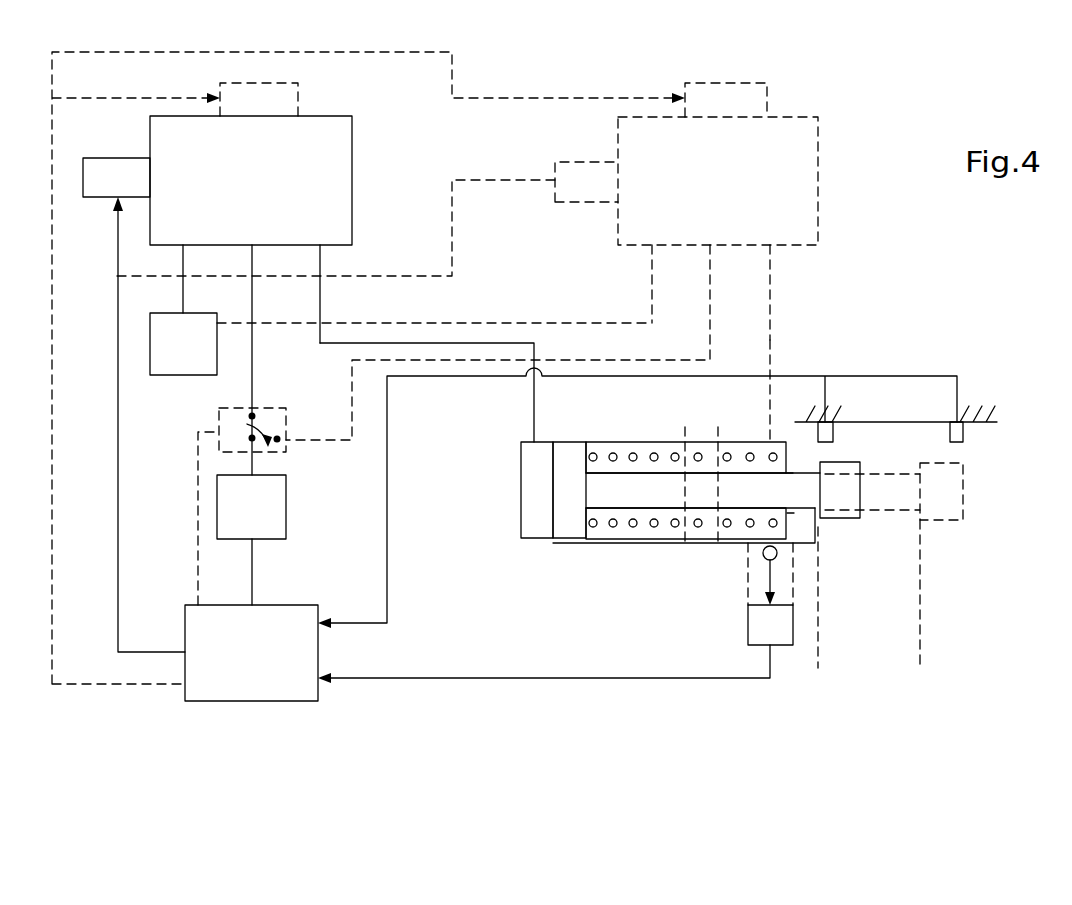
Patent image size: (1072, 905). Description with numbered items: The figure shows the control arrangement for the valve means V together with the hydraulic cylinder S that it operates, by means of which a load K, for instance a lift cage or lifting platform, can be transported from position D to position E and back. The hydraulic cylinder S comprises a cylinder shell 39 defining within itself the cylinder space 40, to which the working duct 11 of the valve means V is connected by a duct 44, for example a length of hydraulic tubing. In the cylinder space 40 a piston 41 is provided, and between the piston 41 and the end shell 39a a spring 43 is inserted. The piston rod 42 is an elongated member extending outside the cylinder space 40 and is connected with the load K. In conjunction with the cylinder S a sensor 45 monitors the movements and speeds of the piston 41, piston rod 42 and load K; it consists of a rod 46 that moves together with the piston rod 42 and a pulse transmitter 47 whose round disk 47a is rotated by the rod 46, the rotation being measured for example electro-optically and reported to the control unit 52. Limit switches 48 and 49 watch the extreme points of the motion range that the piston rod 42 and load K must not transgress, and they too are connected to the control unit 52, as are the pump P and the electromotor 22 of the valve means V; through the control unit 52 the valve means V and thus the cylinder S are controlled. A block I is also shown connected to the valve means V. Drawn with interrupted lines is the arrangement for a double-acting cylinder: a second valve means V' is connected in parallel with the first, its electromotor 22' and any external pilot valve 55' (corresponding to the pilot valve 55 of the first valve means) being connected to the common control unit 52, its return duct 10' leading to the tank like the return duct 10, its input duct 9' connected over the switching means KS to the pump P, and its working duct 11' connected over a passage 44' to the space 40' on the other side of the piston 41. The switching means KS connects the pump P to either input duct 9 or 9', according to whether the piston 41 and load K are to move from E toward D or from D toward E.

The electromotor 22 is at (134, 380).
The external pilot valve 55 is at (302, 96).
The return duct 10 is at (183, 261).
The input duct 9 is at (252, 342).
The working duct 11 is at (316, 276).
The duct 44 is at (427, 357).
The electromotor 22' is at (561, 156).
The external pilot valve 55' is at (755, 77).
The return duct 10' is at (650, 266).
The input duct 9' is at (504, 324).
The working duct 11' is at (771, 274).
The passage 44' is at (804, 357).
The limit switch 48 is at (832, 430).
The limit switch 49 is at (963, 434).
The end shell 39a is at (802, 451).
The cylinder shell 39 is at (676, 514).
The cylinder space 40 is at (503, 466).
The piston 41 is at (572, 447).
The spring 43 is at (613, 457).
The piston rod 42 is at (643, 497).
The space 40' is at (667, 561).
The rod 46 is at (688, 556).
The round disk 47a is at (778, 553).
The pulse transmitter 47 is at (809, 599).
The sensor 45 is at (797, 648).
The control unit 52 is at (237, 670).
The valve means V is at (251, 180).
The second valve means V' is at (718, 181).
The current source I is at (177, 359).
The pump P is at (244, 517).
The switching means KS is at (208, 499).
The hydraulic cylinder S is at (676, 514).
The load K is at (921, 532).
The position D is at (822, 616).
The position E is at (939, 584).